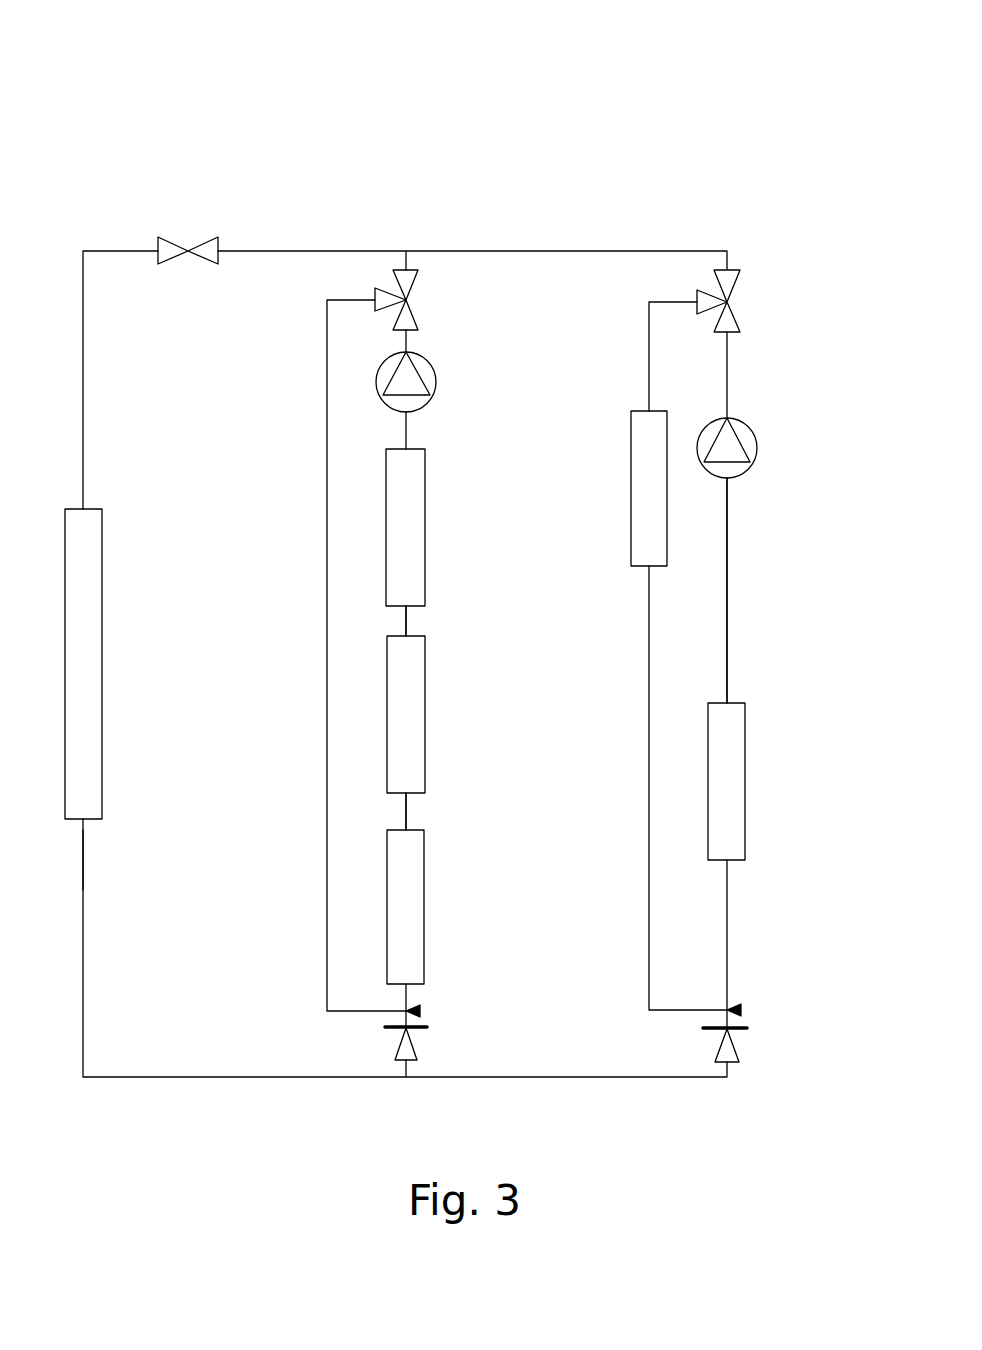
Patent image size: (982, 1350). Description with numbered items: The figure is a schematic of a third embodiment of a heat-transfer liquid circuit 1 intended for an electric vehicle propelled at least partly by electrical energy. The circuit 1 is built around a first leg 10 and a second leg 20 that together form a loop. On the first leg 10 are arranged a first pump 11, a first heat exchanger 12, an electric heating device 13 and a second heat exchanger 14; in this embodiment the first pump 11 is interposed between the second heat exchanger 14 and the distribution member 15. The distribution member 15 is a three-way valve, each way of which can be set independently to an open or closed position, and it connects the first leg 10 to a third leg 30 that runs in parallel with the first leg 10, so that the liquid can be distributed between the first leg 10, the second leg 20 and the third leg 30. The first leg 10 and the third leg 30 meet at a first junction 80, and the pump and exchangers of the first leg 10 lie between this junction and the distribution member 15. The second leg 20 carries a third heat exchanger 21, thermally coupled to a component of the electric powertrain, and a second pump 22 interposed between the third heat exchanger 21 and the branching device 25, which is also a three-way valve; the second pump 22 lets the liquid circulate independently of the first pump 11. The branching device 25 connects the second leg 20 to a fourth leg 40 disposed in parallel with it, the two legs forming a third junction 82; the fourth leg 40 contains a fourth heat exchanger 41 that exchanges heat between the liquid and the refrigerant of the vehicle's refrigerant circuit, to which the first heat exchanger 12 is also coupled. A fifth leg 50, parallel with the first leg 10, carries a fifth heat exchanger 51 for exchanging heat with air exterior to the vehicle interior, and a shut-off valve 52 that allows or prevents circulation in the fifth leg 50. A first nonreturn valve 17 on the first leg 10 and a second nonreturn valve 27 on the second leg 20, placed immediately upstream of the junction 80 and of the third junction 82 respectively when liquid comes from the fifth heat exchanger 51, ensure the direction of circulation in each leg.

The heat-transfer liquid circuit 1 is at (390, 158).
The first leg 10 is at (406, 623).
The first pump 11 is at (436, 382).
The first heat exchanger 12 is at (424, 943).
The electric heating device 13 is at (425, 755).
The second heat exchanger 14 is at (425, 492).
The distribution member 15 is at (412, 303).
The first nonreturn valve 17 is at (399, 1050).
The second leg 20 is at (727, 553).
The third heat exchanger 21 is at (745, 763).
The second pump 22 is at (757, 448).
The branching device 25 is at (733, 300).
The second nonreturn valve 27 is at (734, 1048).
The third leg 30 is at (325, 705).
The fourth leg 40 is at (649, 763).
The fourth heat exchanger 41 is at (631, 513).
The fifth leg 50 is at (83, 897).
The fifth heat exchanger 51 is at (102, 568).
The shut-off valve 52 is at (206, 240).
The first junction 80 is at (420, 1011).
The third junction 82 is at (741, 1010).